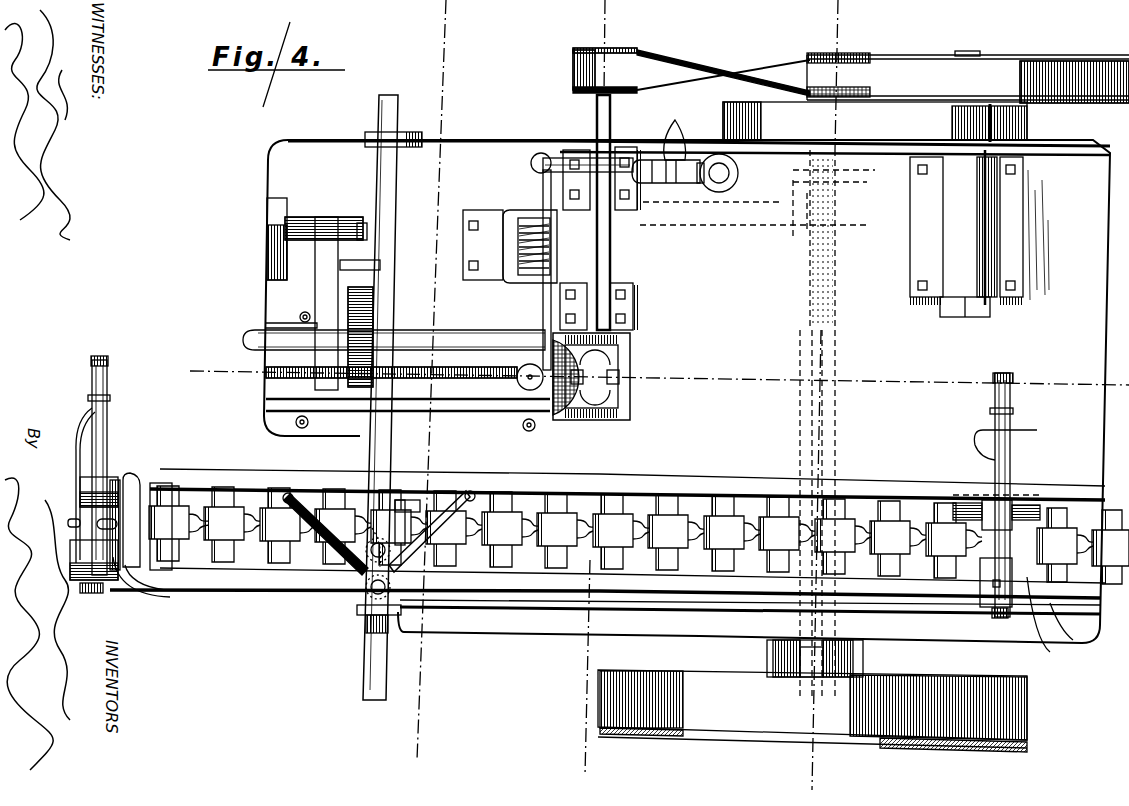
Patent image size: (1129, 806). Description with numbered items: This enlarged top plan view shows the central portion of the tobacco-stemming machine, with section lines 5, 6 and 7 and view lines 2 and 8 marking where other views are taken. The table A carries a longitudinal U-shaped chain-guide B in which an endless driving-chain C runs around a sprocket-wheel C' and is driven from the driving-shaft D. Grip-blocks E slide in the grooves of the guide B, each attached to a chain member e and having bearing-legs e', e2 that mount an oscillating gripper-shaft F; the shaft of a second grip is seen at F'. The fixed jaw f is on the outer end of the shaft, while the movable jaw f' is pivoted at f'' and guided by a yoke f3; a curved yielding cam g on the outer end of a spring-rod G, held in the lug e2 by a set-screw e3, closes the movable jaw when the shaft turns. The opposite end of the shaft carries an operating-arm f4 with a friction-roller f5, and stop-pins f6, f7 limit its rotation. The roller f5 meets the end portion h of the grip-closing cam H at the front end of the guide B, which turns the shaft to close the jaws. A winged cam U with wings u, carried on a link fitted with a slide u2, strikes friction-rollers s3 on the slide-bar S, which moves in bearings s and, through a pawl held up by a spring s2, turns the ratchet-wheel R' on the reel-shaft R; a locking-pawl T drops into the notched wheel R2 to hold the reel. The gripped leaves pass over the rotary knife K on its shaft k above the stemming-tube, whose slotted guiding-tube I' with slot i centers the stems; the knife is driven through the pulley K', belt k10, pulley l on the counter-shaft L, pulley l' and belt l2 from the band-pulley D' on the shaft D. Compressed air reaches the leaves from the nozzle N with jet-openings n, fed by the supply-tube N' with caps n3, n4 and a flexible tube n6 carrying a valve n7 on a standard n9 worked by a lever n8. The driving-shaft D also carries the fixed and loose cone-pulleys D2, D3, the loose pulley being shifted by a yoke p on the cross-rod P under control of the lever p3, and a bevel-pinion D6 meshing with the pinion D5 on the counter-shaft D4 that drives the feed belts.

The table or platen A is at (687, 391).
The chain-guide B is at (763, 475).
The endless driving-chain C is at (639, 548).
The sprocket-wheel C' is at (382, 531).
The driving-shaft D is at (913, 402).
The band-pulley D' is at (875, 86).
The fixed friction cone-pulley D2 is at (660, 748).
The loose cone-pulley D3 is at (812, 709).
The counter-shaft D4 is at (808, 240).
The bevel-pinion D5 is at (845, 226).
The bevel-pinion D6 is at (845, 183).
The cross head or grip-block E is at (165, 598).
The oscillating gripper-shaft F is at (69, 467).
The rod F' is at (977, 495).
The spring-rod G is at (80, 500).
The grip-closing cam H is at (213, 590).
The rotary knife K is at (615, 376).
The driving-pulley K' is at (691, 59).
The counter-shaft L is at (985, 55).
The nozzle N is at (391, 387).
The supply-tube N' is at (510, 226).
The cross-rod P is at (770, 654).
The reel-shaft R is at (372, 324).
The ratchet-wheel R' is at (397, 336).
The locking notched wheel R2 is at (330, 372).
The slide-bar S is at (380, 183).
The locking-pawl T is at (300, 280).
The winged cam U is at (407, 552).
The chain member or link e is at (128, 506).
The bearing-leg e' is at (549, 487).
The bearing-leg or lug e2 is at (72, 548).
The set-screw e3 is at (72, 575).
The fixed jaw f is at (579, 360).
The movable jaw f' is at (550, 388).
The pivot f'' is at (586, 424).
The guiding-yoke f3 is at (93, 385).
The operating-arm f4 is at (97, 522).
The friction-roller f5 is at (95, 595).
The stop-pin f6 is at (1040, 510).
The stop-pin f7 is at (980, 540).
The curved stationary adjustable cam g is at (85, 415).
The end portion of grip-closing cam h is at (125, 595).
The slot i is at (419, 433).
The slotted guiding-tube I' is at (415, 431).
The knife-shaft k is at (604, 212).
The belt k10 is at (800, 70).
The pulley l is at (1074, 64).
The pulley l' is at (1042, 118).
The belt l2 is at (870, 118).
The jet-openings n is at (543, 350).
The removable cap or plug n3 is at (499, 435).
The removable cap or plug n4 is at (518, 372).
The flexible tube n6 is at (548, 155).
The valve n7 is at (690, 195).
The operating-lever n8 is at (660, 160).
The standard n9 is at (740, 180).
The yoke p is at (865, 656).
The lever p3 is at (690, 150).
The bearings s is at (405, 140).
The spring s2 is at (379, 619).
The friction-rollers s3 is at (362, 626).
The cam grades or wings u is at (290, 496).
The cross heads or slides u2 is at (410, 500).
The view line 2 is at (600, 5).
The section line 5 is at (1120, 392).
The section line 6 is at (412, 757).
The section line 7 is at (584, 753).
The view line 8 is at (826, 768).